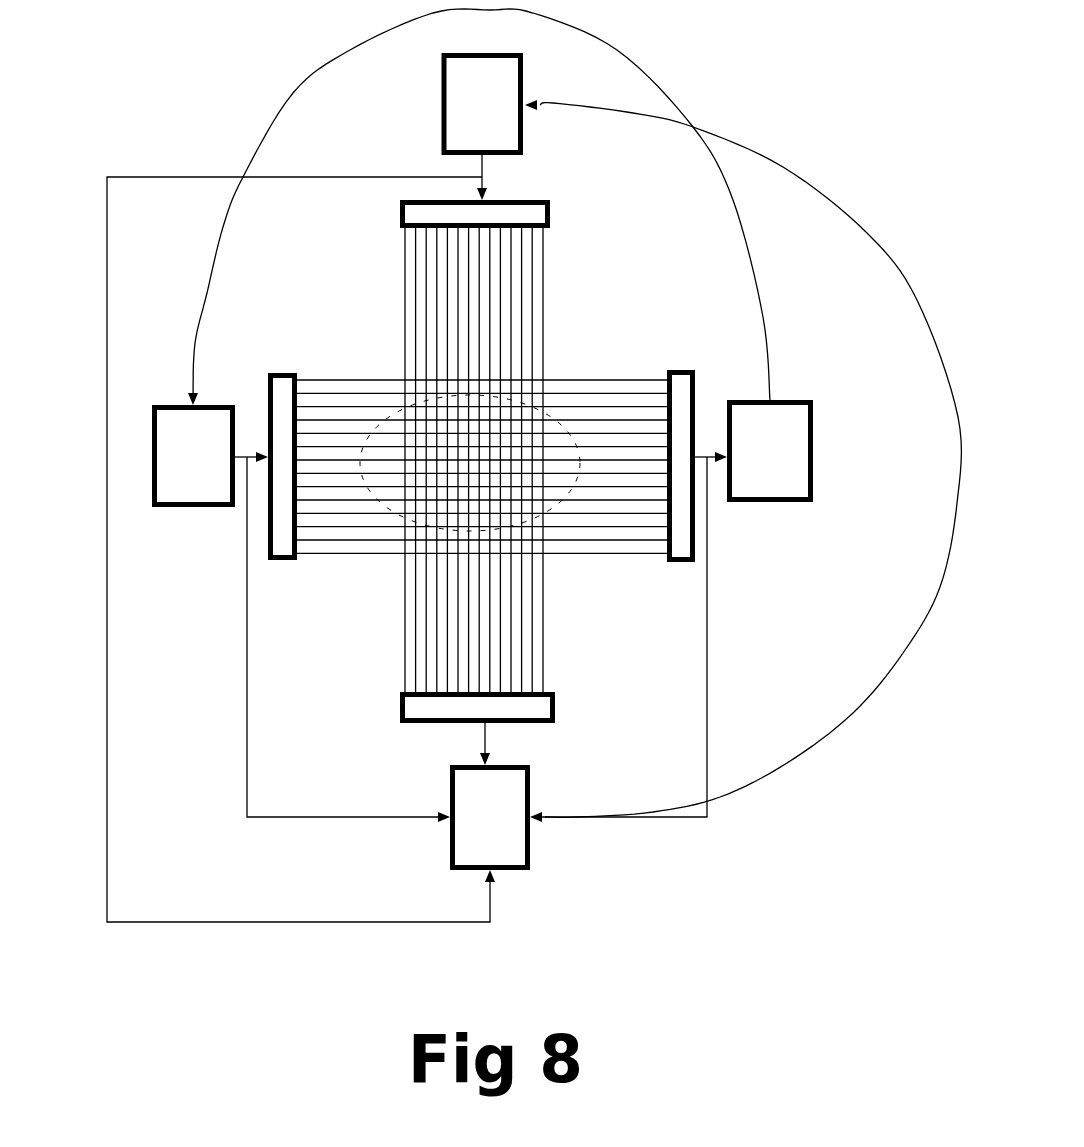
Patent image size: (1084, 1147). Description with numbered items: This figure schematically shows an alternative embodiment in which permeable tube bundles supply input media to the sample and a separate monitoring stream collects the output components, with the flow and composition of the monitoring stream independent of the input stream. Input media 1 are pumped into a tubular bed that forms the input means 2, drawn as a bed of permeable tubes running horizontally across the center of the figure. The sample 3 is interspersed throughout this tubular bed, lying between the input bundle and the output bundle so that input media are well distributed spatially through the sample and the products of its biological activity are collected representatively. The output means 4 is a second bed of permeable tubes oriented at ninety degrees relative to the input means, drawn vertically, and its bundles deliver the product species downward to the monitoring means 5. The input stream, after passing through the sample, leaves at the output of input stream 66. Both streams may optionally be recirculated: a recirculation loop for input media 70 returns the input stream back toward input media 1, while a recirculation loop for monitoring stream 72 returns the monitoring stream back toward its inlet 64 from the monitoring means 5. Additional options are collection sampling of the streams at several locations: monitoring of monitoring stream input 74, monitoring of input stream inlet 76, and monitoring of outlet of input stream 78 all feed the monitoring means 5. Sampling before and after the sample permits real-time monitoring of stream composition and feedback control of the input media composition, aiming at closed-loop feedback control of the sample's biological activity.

The input media 1 is at (212, 456).
The input means 2 is at (482, 443).
The sample 3 is at (545, 381).
The output means 4 is at (497, 684).
The monitoring means 5 is at (490, 795).
The first detector 64 is at (482, 128).
The output of input stream 66 is at (753, 451).
The recirculation loop for input media 70 is at (479, 207).
The recirculation loop for monitoring stream 72 is at (743, 461).
The monitoring of monitoring stream input 74 is at (269, 549).
The monitoring of input stream inlet 76 is at (323, 639).
The monitoring of outlet of input stream 78 is at (653, 637).